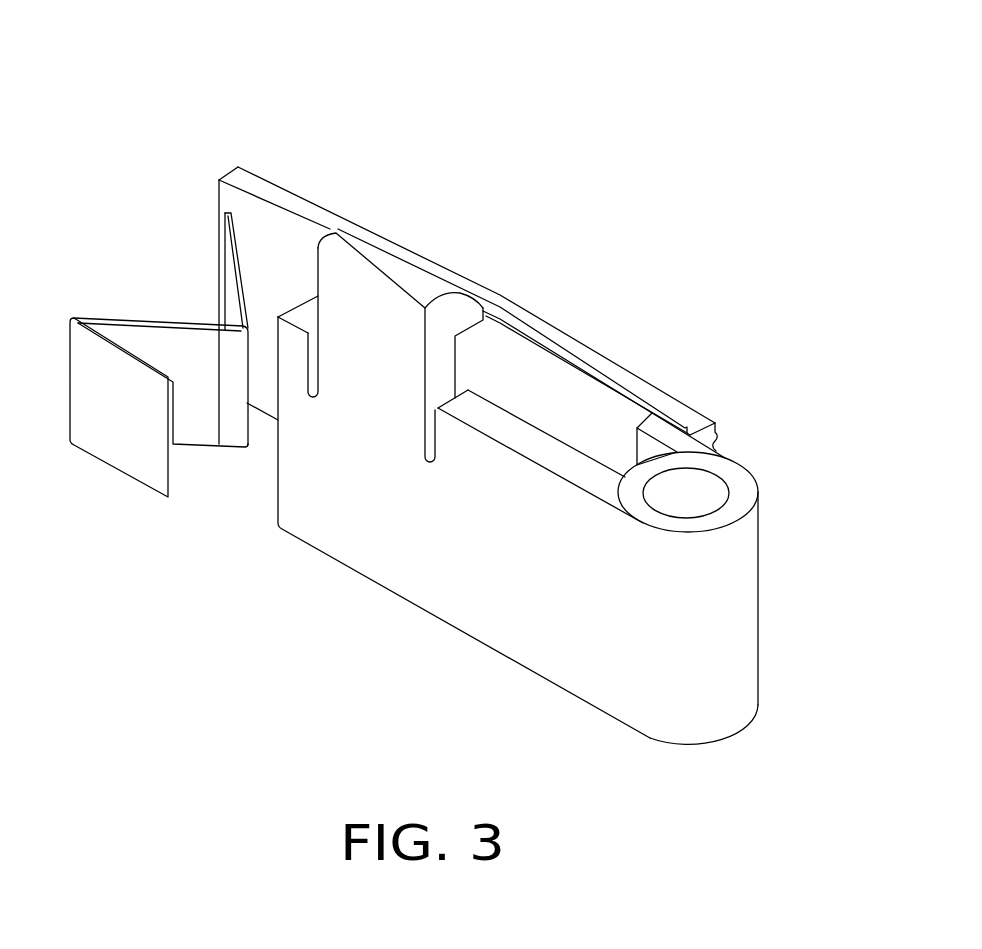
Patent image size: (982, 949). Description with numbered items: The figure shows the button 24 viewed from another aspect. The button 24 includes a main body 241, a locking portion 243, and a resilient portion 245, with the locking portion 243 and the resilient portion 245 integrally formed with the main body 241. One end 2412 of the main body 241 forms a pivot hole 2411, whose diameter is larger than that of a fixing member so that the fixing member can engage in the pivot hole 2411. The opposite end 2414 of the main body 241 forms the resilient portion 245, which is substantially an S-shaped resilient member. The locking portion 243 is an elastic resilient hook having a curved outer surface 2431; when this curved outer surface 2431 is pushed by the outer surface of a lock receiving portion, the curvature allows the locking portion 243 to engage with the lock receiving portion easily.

The button 24 is at (514, 45).
The main body 241 is at (330, 205).
The end of the main body 2414 is at (288, 207).
The pivot hole 2411 is at (693, 491).
The end of the main body 2412 is at (632, 502).
The locking portion 243 is at (462, 314).
The outer surface of the locking portion 2431 is at (386, 268).
The resilient portion 245 is at (120, 425).